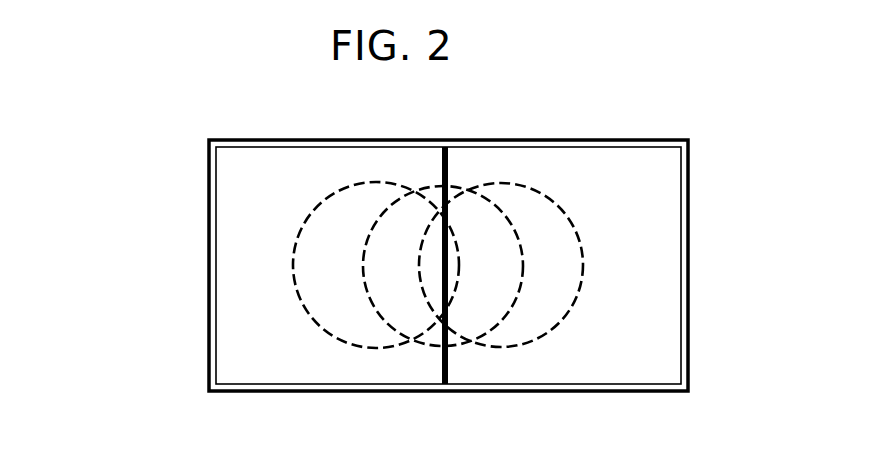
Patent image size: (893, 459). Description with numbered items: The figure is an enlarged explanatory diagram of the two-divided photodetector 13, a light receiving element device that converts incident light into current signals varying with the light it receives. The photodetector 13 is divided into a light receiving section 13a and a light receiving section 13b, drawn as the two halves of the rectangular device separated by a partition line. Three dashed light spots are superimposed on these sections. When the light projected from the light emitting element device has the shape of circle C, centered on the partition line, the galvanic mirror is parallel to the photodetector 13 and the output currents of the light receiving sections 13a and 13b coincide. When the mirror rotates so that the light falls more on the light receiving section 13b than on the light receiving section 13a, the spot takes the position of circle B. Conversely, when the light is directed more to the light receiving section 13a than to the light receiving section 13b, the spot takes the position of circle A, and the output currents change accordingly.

The two-divided photodetector 13 is at (610, 142).
The light receiving section 13a is at (663, 280).
The light receiving section 13b is at (226, 233).
The circle A is at (547, 333).
The circle B is at (362, 348).
The circle C is at (460, 348).